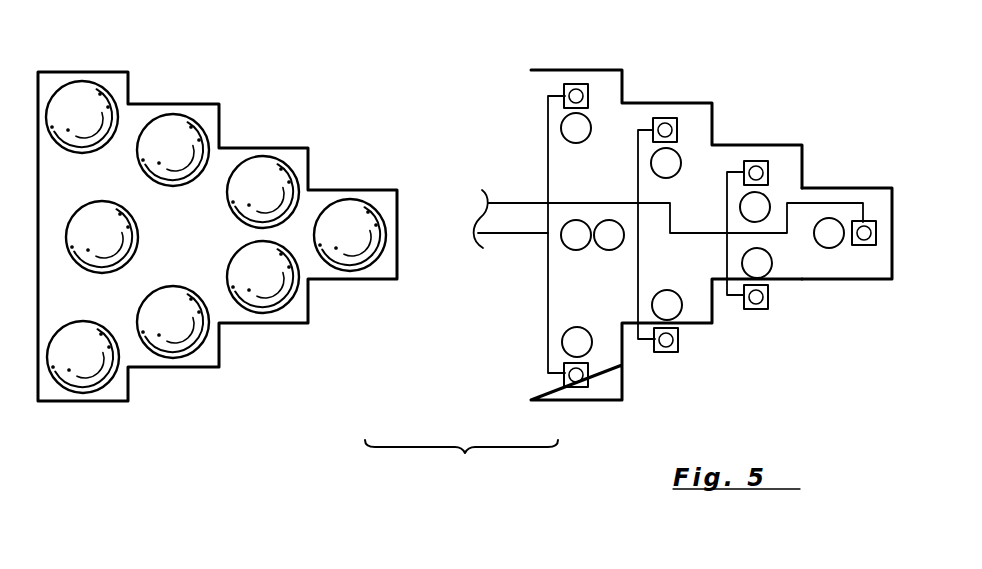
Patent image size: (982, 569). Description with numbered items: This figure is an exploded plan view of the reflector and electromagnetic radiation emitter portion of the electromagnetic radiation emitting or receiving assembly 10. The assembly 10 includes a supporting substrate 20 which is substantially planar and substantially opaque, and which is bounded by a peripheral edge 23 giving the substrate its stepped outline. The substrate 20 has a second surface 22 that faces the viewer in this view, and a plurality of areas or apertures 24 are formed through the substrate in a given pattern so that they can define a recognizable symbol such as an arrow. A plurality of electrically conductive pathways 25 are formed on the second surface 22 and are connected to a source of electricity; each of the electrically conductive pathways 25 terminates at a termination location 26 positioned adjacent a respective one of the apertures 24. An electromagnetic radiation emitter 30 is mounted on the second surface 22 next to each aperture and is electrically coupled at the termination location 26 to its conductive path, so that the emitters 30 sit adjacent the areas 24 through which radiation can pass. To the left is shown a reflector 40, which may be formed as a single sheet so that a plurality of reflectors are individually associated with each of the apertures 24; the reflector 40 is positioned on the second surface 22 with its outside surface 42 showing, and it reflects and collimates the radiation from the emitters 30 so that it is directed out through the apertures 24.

The electromagnetic radiation emitting or receiving assembly 10 is at (674, 221).
The supporting substrate 20 is at (711, 226).
The second surface 22 is at (618, 132).
The peripheral edge 23 is at (847, 187).
The areas or apertures 24 is at (557, 128).
The electrically conductive pathways 25 is at (727, 257).
The termination location 26 is at (687, 128).
The electromagnetic radiation emitter 30 is at (577, 83).
The reflector 40 is at (168, 140).
The outside surface 42 is at (77, 107).